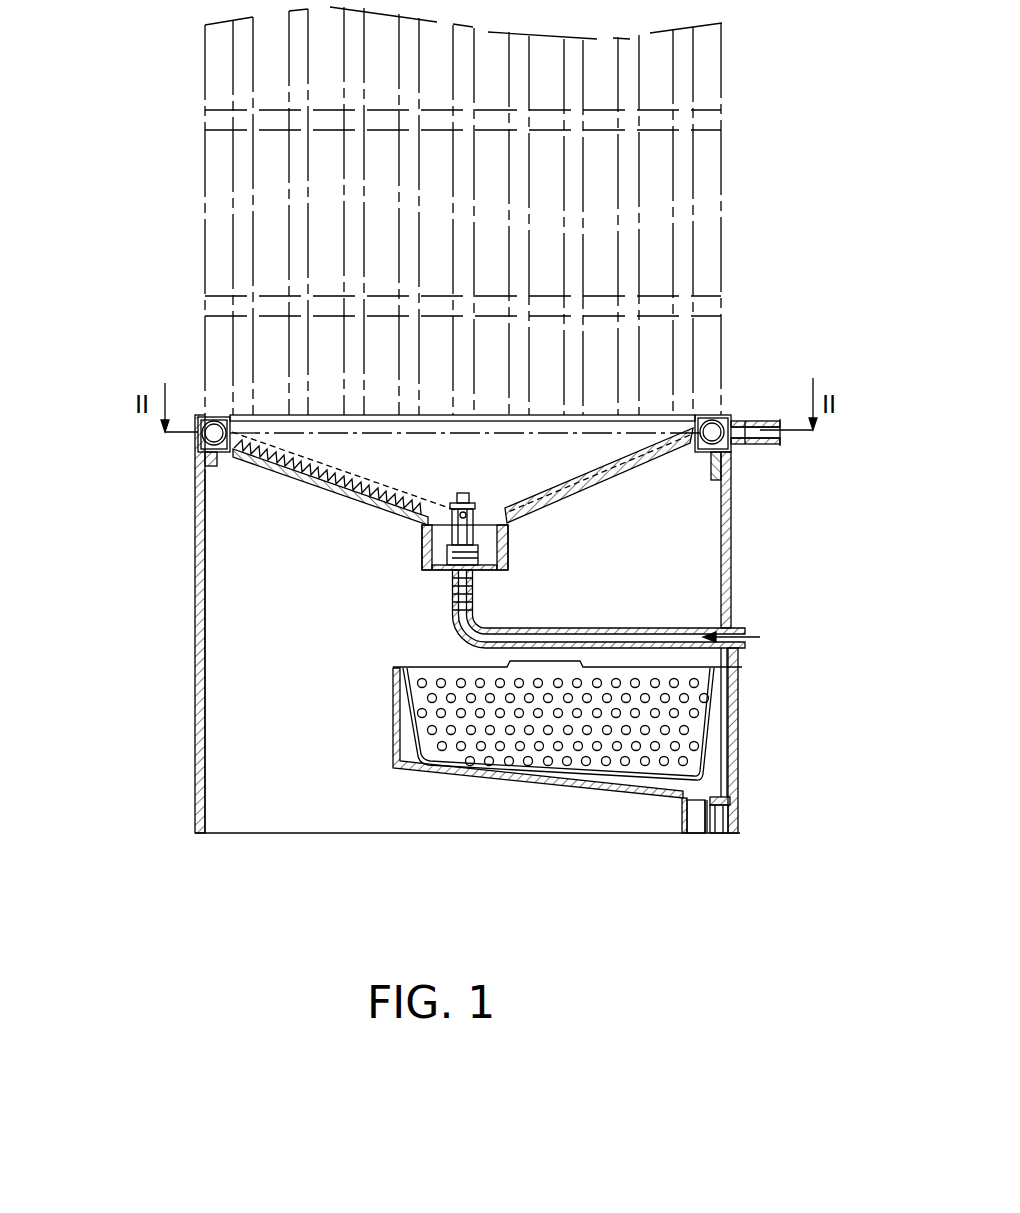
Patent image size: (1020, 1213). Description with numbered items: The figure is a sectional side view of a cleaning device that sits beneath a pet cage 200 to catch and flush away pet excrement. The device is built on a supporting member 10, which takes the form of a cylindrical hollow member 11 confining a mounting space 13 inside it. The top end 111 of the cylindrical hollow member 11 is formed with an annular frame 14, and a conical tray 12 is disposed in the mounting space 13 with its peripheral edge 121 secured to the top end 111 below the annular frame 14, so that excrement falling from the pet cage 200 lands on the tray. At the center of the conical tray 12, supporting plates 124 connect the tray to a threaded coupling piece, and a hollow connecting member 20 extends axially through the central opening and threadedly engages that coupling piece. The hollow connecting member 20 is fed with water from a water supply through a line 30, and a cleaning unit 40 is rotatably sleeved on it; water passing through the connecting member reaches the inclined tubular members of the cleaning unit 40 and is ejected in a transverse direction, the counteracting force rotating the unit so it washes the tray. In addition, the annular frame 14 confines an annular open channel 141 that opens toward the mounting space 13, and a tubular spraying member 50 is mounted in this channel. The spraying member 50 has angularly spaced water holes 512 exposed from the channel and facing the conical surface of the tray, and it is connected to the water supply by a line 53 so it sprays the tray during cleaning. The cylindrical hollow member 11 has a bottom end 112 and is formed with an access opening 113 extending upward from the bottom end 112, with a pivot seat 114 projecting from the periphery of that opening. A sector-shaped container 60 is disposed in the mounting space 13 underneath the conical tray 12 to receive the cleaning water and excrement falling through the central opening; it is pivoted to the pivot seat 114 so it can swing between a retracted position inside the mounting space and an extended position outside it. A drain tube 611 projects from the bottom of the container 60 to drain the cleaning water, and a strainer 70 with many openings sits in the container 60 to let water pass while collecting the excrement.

The pet cage 200 is at (196, 88).
The tubular spraying member 50 is at (203, 418).
The cleaning unit 40 is at (566, 480).
The line 53 is at (742, 425).
The annular frame 14 is at (204, 436).
The annular open channel 141 is at (197, 448).
The top end 111 is at (200, 478).
The water holes 512 is at (237, 457).
The conical tray 12 is at (313, 484).
The supporting plates 124 is at (447, 552).
The hollow connecting member 20 is at (430, 527).
The peripheral edge 121 is at (717, 478).
The line 30 is at (640, 622).
The supporting member 10 is at (477, 678).
The mounting space 13 is at (255, 722).
The cylindrical hollow member 11 is at (200, 775).
The bottom end 112 is at (200, 833).
The pivot seat 114 is at (735, 800).
The access opening 113 is at (725, 825).
The sector-shaped container 60 is at (550, 834).
The drain tube 611 is at (685, 820).
The strainer 70 is at (712, 730).